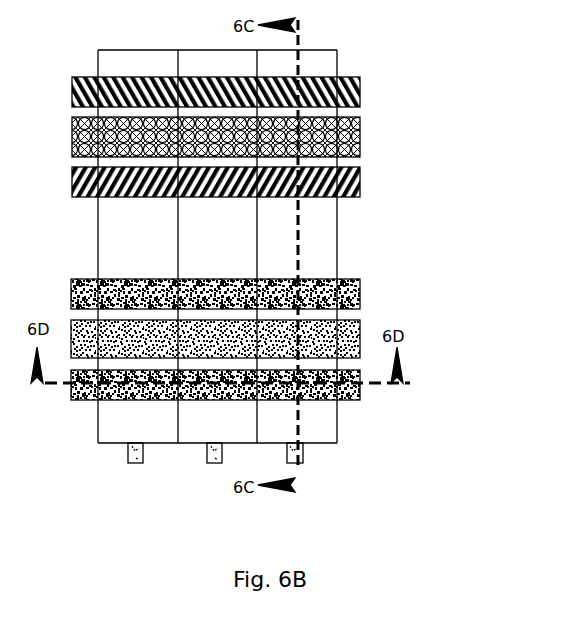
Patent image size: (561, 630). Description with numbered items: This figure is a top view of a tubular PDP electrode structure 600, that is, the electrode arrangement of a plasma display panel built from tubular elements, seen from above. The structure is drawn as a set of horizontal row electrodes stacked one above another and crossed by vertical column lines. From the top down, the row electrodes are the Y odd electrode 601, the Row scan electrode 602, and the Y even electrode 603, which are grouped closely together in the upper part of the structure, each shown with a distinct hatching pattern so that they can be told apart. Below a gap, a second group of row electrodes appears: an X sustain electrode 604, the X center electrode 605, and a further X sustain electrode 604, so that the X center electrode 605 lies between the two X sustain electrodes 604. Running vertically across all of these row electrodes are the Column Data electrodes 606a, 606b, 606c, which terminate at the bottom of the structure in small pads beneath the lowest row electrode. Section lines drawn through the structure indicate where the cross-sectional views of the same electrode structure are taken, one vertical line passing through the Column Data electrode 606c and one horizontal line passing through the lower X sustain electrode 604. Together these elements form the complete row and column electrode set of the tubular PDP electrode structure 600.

The tubular PDP electrode structure 600 is at (347, 228).
The Y odd electrode 601 is at (360, 90).
The Row scan electrode 602 is at (360, 130).
The Y even electrode 603 is at (360, 182).
The X sustain electrode 604 is at (360, 290).
The X center electrode 605 is at (360, 340).
The Column Data electrode 606a is at (138, 465).
The Column Data electrode 606b is at (216, 463).
The Column Data electrode 606c is at (299, 467).